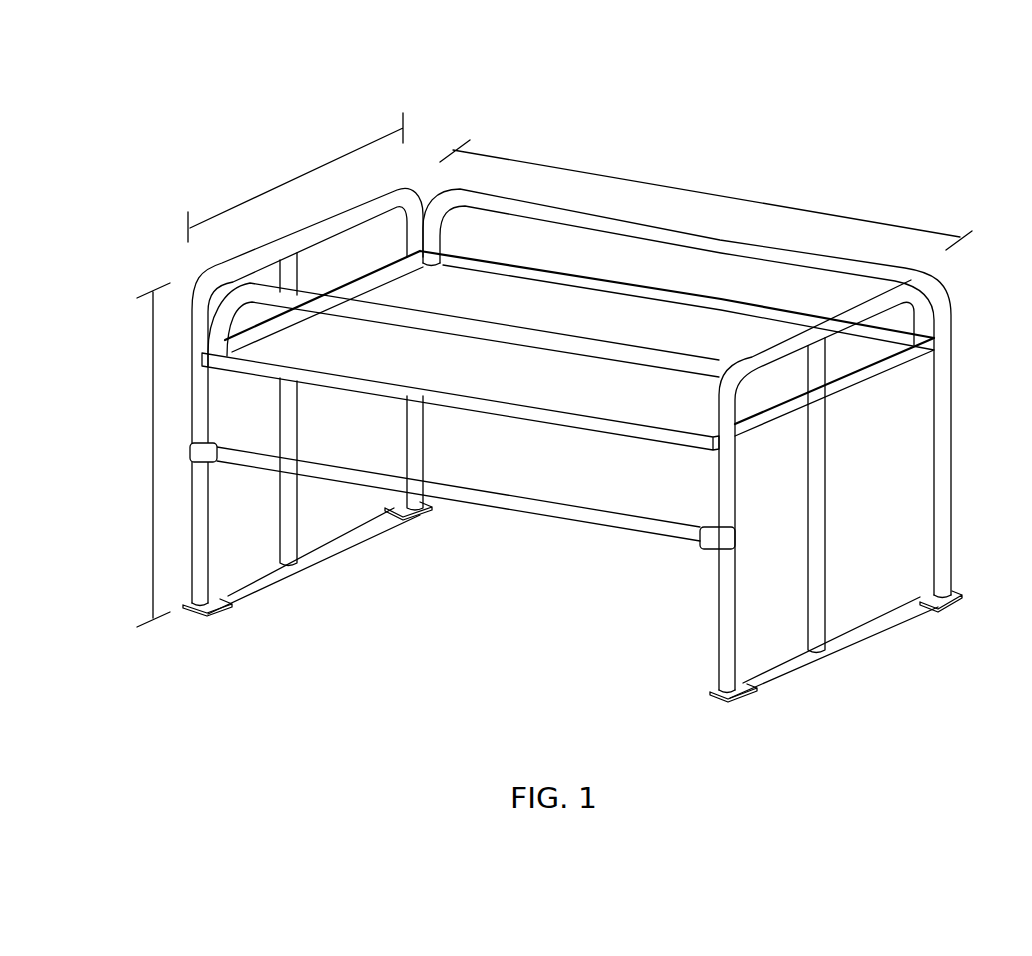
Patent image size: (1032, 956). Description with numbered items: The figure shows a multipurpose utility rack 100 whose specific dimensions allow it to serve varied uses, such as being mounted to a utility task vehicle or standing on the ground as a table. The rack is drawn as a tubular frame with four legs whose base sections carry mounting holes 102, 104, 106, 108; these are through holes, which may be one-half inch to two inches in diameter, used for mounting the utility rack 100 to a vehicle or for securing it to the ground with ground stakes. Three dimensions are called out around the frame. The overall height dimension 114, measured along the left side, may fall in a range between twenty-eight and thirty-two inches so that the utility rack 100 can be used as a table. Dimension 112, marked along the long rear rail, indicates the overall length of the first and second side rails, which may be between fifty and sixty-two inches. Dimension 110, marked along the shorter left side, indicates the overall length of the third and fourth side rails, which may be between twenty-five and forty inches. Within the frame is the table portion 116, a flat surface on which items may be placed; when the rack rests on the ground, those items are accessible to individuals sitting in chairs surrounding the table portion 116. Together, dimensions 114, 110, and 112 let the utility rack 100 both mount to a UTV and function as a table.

The multipurpose utility rack 100 is at (526, 393).
The mounting hole 102 is at (220, 598).
The mounting hole 104 is at (403, 514).
The mounting hole 106 is at (750, 684).
The mounting hole 108 is at (923, 603).
The dimension 110 is at (283, 185).
The dimension 112 is at (667, 187).
The overall height dimension 114 is at (152, 470).
The table portion 116 is at (555, 316).